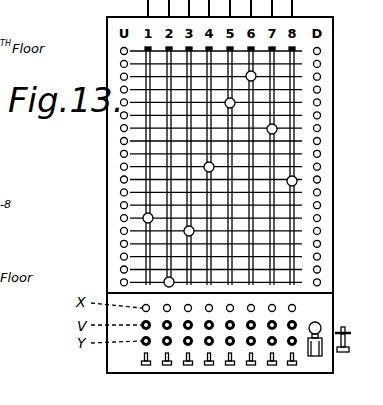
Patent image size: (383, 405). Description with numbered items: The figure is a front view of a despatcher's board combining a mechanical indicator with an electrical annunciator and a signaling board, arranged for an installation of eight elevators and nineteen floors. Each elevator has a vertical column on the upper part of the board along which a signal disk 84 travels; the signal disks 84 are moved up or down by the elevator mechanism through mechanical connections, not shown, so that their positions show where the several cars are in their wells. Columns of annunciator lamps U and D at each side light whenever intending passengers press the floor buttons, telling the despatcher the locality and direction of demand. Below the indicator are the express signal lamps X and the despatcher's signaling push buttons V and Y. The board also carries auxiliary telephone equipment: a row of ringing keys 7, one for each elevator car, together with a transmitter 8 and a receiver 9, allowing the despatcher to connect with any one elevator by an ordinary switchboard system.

The signal disks 84 is at (342, 188).
The ringing keys 7 is at (150, 366).
The transmitter 8 is at (322, 356).
The receiver 9 is at (352, 344).